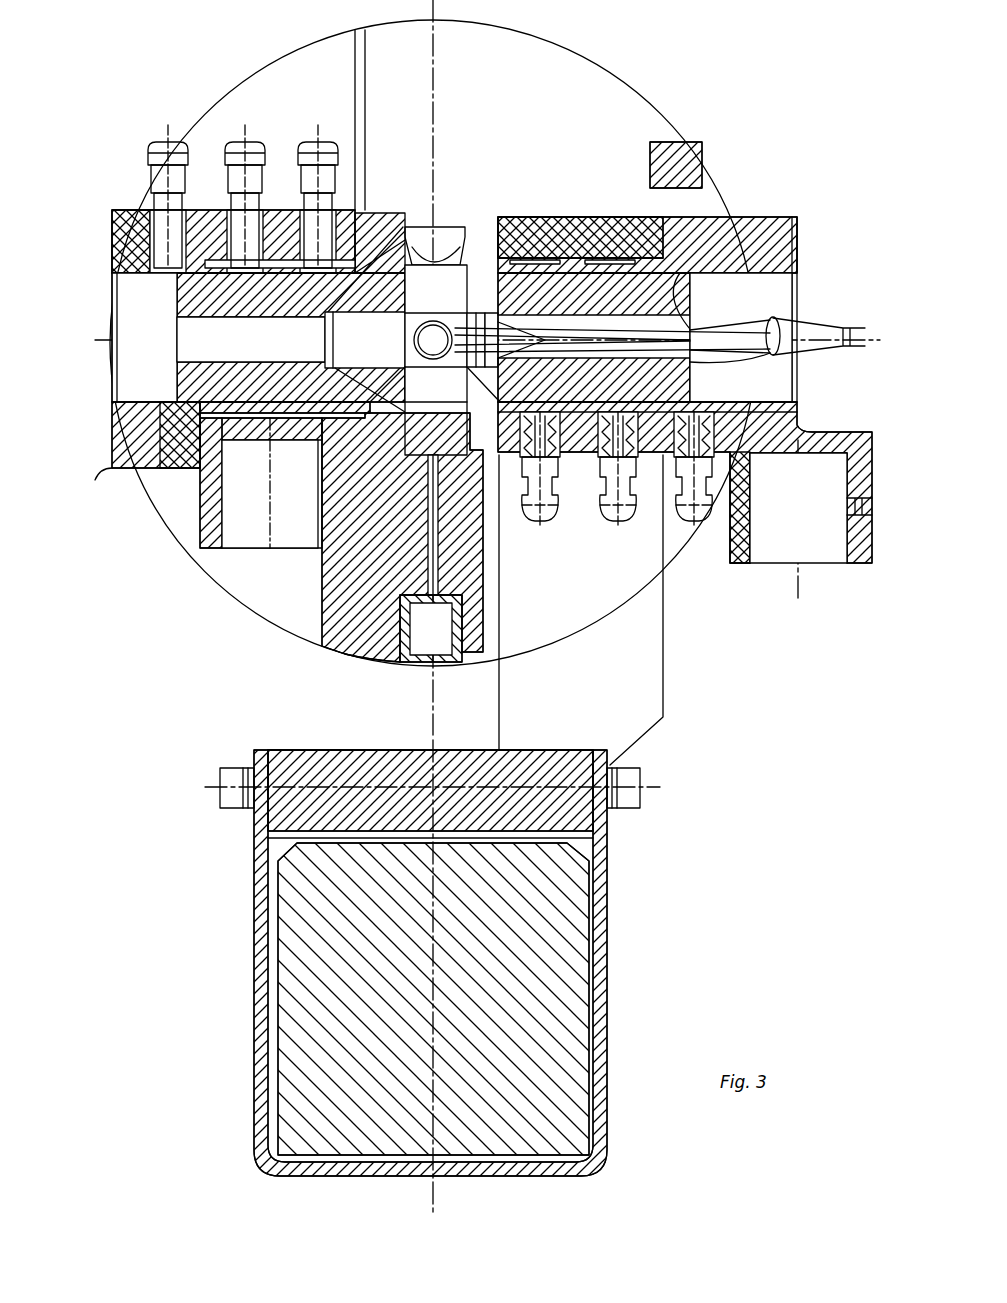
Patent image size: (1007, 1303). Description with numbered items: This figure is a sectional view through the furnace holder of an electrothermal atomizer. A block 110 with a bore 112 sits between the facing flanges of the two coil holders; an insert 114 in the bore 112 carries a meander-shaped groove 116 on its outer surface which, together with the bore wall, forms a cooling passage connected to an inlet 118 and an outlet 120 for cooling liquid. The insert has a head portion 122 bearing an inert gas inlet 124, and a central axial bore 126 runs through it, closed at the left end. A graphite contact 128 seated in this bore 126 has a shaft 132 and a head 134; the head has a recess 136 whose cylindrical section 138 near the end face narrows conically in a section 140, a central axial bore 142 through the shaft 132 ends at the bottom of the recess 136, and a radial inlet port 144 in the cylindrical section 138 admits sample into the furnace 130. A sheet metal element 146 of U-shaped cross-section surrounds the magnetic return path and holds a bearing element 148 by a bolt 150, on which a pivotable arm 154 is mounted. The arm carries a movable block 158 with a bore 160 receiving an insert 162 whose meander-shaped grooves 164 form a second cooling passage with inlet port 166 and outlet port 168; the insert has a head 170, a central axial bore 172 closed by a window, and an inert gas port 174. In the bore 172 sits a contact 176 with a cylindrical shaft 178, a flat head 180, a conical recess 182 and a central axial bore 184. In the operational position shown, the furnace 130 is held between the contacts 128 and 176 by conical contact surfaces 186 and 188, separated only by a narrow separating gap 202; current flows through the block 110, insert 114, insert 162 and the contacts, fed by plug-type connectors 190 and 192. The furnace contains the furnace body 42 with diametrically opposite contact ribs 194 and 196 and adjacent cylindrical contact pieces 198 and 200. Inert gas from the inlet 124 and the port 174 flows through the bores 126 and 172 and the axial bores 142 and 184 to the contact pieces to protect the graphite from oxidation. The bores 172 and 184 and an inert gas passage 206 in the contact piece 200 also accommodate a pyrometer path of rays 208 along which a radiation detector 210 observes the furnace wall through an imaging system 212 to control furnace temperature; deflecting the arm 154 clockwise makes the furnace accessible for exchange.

The furnace body 42 is at (372, 612).
The block 110 is at (340, 598).
The bore 112 is at (163, 404).
The insert 114 is at (279, 262).
The meander-shaped groove 116 is at (356, 214).
The inlet 118 is at (245, 141).
The outlet 120 is at (320, 141).
The head portion 122 is at (116, 468).
The inert gas inlet 124 is at (150, 165).
The central axial bore 126 is at (262, 440).
The contact 128 is at (145, 470).
The furnace 130 is at (454, 292).
The shaft 132 is at (180, 300).
The head 134 is at (380, 240).
The recess 136 is at (452, 455).
The cylindrical section 138 is at (445, 500).
The conical section 140 is at (302, 522).
The central axial bore 142 is at (180, 360).
The radial inlet port 144 is at (433, 225).
The sheet metal element 146 is at (536, 1168).
The reservoir lid 148 is at (343, 762).
The bolt 150 is at (642, 800).
The pivotable arm 154 is at (665, 705).
The movable block 158 is at (592, 233).
The bore 160 is at (700, 238).
The insert 162 is at (809, 237).
The meander-shaped grooves 164 is at (685, 180).
The inlet port 166 is at (626, 522).
The outlet port 168 is at (552, 515).
The head 170 is at (742, 566).
The central axial bore 172 is at (797, 397).
The inert gas port 174 is at (703, 524).
The contact 176 is at (505, 322).
The cylindrical shaft 178 is at (740, 268).
The flat head 180 is at (519, 258).
The conical recess 182 is at (488, 350).
The central axial bore 184 is at (705, 332).
The conical contact surface 186 is at (300, 322).
The conical contact surface 188 is at (572, 458).
The plug-type connector 190 is at (240, 535).
The plug-type connector 192 is at (818, 546).
The contact rib 194 is at (386, 313).
The contact rib 196 is at (478, 318).
The contact piece 198 is at (316, 440).
The contact piece 200 is at (455, 316).
The separating gap 202 is at (475, 320).
The inert gas passage 206 is at (429, 355).
The pyrometer path of rays 208 is at (705, 356).
The radiation detector 210 is at (853, 334).
The imaging system 212 is at (778, 330).